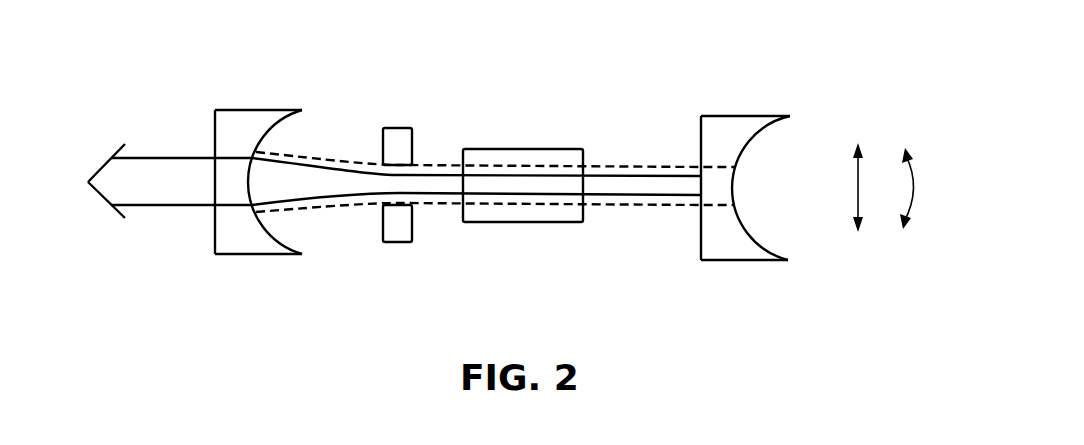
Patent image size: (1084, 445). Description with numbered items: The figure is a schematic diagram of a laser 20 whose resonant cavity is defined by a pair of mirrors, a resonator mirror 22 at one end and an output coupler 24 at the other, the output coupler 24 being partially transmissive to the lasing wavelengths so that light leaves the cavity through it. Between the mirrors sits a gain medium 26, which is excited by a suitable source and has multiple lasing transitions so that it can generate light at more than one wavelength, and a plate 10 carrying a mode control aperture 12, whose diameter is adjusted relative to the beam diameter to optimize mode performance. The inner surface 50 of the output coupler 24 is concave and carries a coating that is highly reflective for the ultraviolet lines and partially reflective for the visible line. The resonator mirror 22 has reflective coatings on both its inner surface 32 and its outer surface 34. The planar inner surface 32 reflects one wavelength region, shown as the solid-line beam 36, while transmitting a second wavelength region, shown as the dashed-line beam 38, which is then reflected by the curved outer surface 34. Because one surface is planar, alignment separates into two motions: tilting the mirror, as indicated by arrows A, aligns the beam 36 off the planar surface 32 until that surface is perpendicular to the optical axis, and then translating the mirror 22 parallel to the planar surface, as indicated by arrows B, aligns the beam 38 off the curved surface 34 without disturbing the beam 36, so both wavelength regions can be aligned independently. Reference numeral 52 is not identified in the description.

The laser 20 is at (607, 79).
The output coupler mirror 24 is at (243, 108).
The flat surface of output mirror 52 is at (214, 233).
The inner surface of the output coupler 50 is at (283, 246).
The plate 10 is at (397, 127).
The mode control aperture 12 is at (384, 201).
The gain medium 26 is at (495, 148).
The beam of the first wavelength region 36 is at (617, 202).
The beam of the second wavelength region 38 is at (662, 207).
The resonator mirror 22 is at (738, 113).
The inner surface 32 is at (700, 247).
The outer surface 34 is at (772, 254).
The arrows indicating tilting A is at (920, 188).
The arrows indicating translation B is at (848, 187).